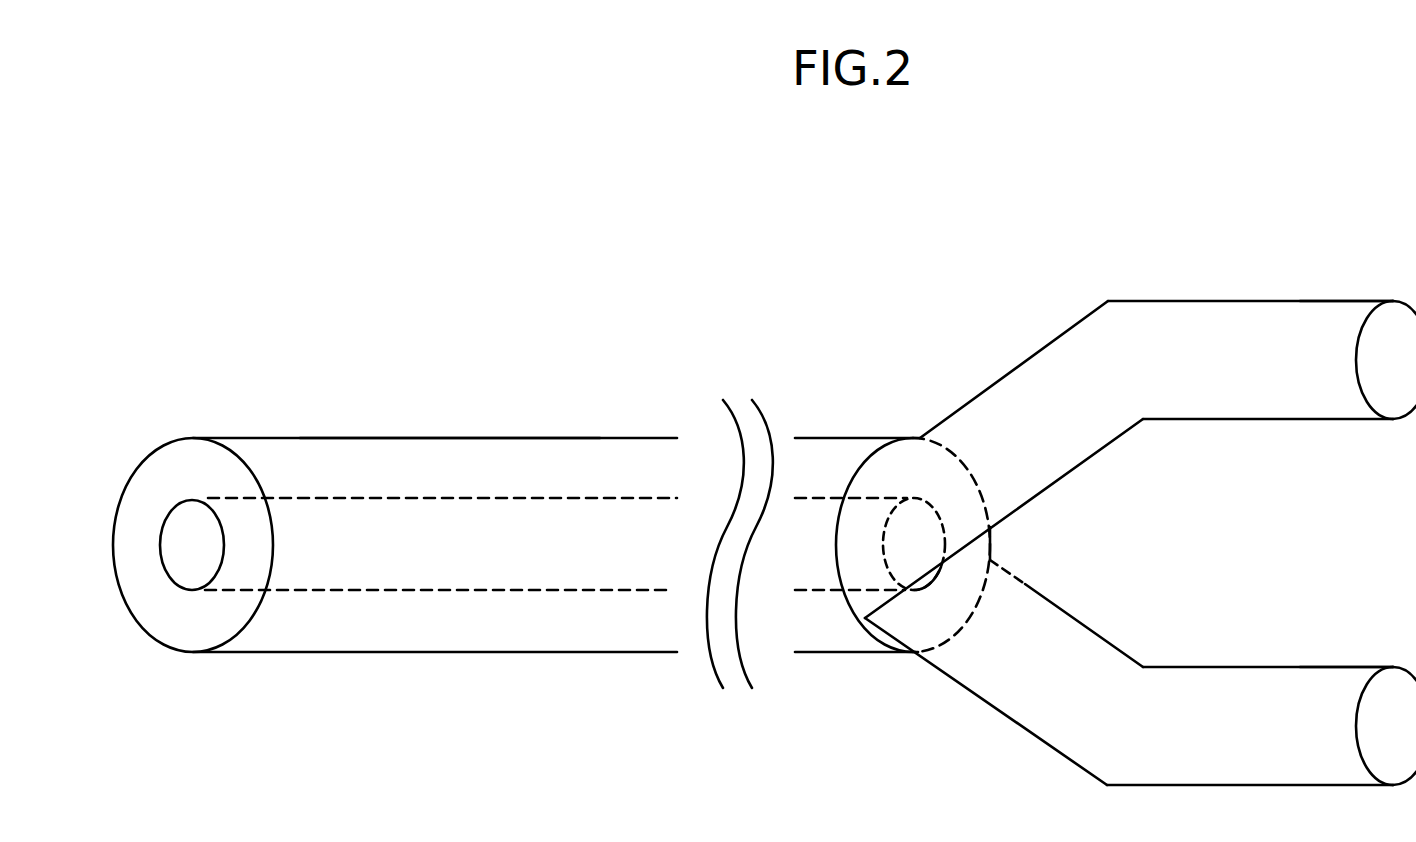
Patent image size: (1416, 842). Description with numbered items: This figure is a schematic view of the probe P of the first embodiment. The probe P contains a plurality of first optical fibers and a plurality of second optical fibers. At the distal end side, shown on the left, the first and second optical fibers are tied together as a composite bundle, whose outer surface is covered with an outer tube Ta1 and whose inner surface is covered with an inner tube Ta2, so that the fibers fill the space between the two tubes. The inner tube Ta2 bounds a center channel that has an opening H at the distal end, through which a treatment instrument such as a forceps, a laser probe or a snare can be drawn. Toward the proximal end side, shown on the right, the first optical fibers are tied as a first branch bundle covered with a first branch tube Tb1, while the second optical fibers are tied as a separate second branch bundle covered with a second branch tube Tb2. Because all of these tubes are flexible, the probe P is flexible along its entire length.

The opening H is at (190, 508).
The outer tube Ta1 is at (335, 437).
The inner tube Ta2 is at (630, 498).
The probe P is at (938, 282).
The first branch tube Tb1 is at (1312, 298).
The second branch tube Tb2 is at (1312, 665).